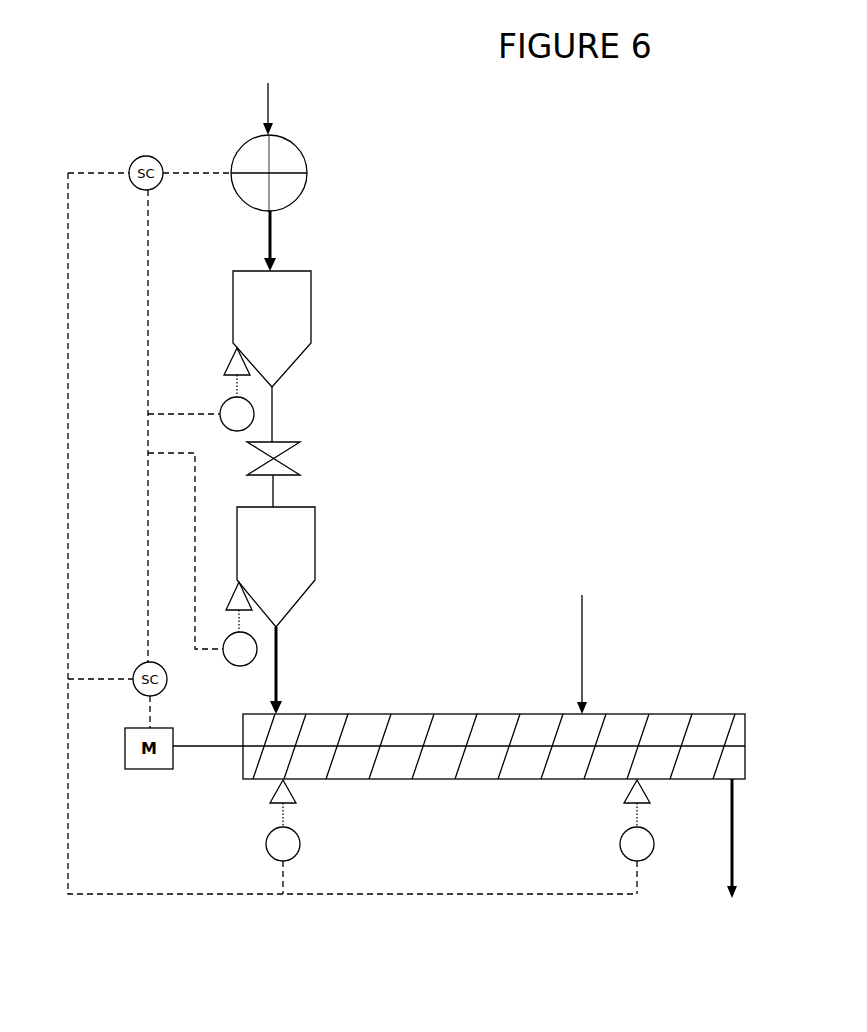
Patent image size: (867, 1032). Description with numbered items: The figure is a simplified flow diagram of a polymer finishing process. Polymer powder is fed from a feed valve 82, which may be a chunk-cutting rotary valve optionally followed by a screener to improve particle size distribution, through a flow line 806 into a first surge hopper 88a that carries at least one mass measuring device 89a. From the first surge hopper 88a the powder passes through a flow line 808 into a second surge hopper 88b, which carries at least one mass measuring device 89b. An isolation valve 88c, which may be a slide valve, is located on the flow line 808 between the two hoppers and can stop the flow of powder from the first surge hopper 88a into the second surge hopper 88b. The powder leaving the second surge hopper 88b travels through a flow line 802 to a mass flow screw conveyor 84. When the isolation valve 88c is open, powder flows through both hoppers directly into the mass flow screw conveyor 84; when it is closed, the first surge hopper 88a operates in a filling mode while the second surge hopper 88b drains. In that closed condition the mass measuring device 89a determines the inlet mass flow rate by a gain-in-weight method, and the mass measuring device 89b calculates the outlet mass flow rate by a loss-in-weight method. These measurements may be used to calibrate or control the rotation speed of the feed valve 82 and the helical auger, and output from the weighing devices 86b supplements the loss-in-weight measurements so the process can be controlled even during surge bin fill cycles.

The feed valve 82 is at (312, 149).
The flow line 806 is at (238, 241).
The first surge hopper 88a is at (323, 304).
The mass measuring device 89a is at (222, 400).
The flow line 808 is at (298, 414).
The isolation valve 88c is at (311, 457).
The second surge hopper 88b is at (329, 533).
The mass measuring device 89b is at (223, 658).
The flow line 802 is at (297, 670).
The mass flow screw conveyor 84 is at (756, 694).
The weighing devices 86b is at (316, 828).